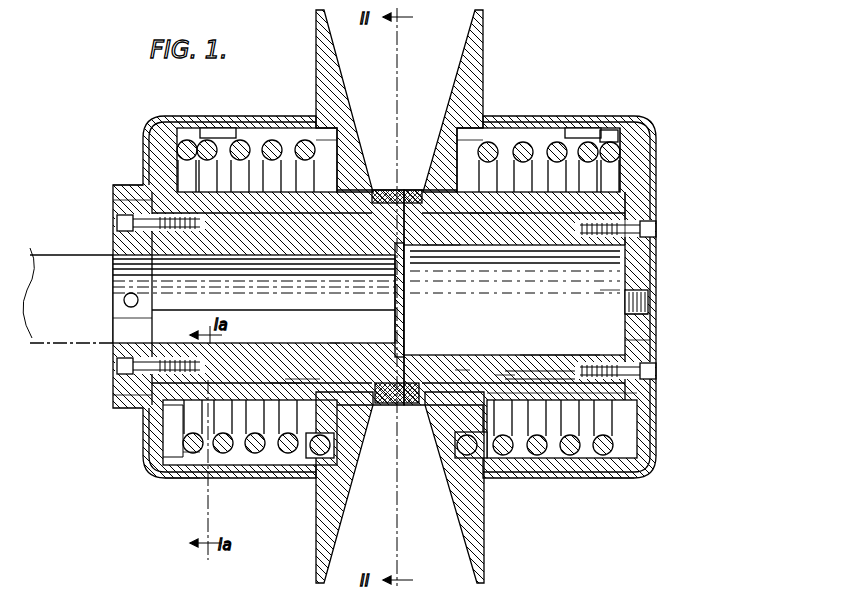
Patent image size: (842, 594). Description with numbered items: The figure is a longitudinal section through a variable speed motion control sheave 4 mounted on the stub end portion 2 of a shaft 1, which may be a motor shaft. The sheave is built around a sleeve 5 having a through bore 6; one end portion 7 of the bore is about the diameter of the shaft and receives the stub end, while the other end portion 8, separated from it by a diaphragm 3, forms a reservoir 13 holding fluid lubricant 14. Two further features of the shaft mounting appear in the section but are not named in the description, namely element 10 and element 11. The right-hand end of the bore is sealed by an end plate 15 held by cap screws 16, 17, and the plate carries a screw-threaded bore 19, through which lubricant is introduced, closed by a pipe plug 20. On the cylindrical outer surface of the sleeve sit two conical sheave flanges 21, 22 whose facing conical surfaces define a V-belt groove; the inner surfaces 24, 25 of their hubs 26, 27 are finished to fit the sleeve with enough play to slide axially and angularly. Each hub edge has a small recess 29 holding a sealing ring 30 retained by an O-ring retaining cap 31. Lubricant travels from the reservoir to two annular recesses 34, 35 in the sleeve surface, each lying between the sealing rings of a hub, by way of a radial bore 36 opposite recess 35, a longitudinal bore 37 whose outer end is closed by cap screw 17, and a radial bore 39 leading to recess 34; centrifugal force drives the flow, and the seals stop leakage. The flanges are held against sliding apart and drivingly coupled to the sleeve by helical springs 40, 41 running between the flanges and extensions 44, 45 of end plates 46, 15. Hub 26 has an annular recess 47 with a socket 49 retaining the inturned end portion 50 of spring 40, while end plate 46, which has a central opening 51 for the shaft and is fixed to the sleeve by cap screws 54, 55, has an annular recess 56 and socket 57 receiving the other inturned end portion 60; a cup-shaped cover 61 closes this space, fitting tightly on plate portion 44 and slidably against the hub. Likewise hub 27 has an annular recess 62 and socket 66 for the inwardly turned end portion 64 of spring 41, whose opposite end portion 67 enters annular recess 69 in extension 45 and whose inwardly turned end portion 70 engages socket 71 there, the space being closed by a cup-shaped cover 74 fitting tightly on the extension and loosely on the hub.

The shaft 1 is at (45, 340).
The stub end portion 2 is at (112, 318).
The diaphragm 3 is at (410, 297).
The motion control sheave 4 is at (113, 186).
The sleeve 5 is at (466, 370).
The longitudinal through-extending bore 6 is at (535, 372).
The end portion of bore 7 is at (272, 380).
The end portion of bore 8 is at (545, 225).
The shaft bore 10 is at (167, 290).
The lubrication hole 11 is at (147, 296).
The reservoir 13 is at (640, 345).
The fluid lubricant 14 is at (615, 282).
The end plate 15 is at (643, 250).
The cap screw 16 is at (656, 228).
The cap screw 17 is at (656, 371).
The screw-threaded bore 19 is at (648, 318).
The pipe plug 20 is at (648, 300).
The conical sheave flange 21 is at (320, 62).
The conical sheave flange 22 is at (482, 62).
The inner surface of hub 24 is at (280, 380).
The inner surface of hub 25 is at (480, 218).
The hub 26 is at (288, 380).
The hub 27 is at (515, 215).
The annularly extending recess 29 is at (382, 187).
The sealing ring 30 is at (398, 188).
The O-ring retaining cap 31 is at (370, 185).
The annular recess 34 is at (330, 380).
The annular recess 35 is at (517, 378).
The radially extending bore 36 is at (505, 378).
The longitudinally extending bore 37 is at (465, 362).
The radially extending bore 39 is at (335, 378).
The helical spring 40 is at (210, 162).
The helical spring 41 is at (568, 175).
The extension of end plate 44 is at (160, 175).
The extension of end plate 45 is at (641, 158).
The end plate 46 is at (118, 203).
The annular recess 47 is at (268, 445).
The socket 49 is at (308, 170).
The inturned end portion 50 is at (330, 178).
The central opening 51 is at (117, 366).
The cap screw 54 is at (117, 224).
The cap screw 55 is at (140, 392).
The annular recess 56 is at (193, 455).
The socket 57 is at (168, 424).
The inturned end portion 60 is at (165, 432).
The cup-shaped cover 61 is at (182, 484).
The annular recess 62 is at (520, 455).
The inwardly turned end portion 64 is at (462, 178).
The socket 66 is at (482, 178).
The end portion of spring 67 is at (610, 150).
The annular recess 69 is at (610, 185).
The inwardly turned end portion 70 is at (633, 425).
The socket 71 is at (640, 395).
The cup-shaped cover 74 is at (610, 480).